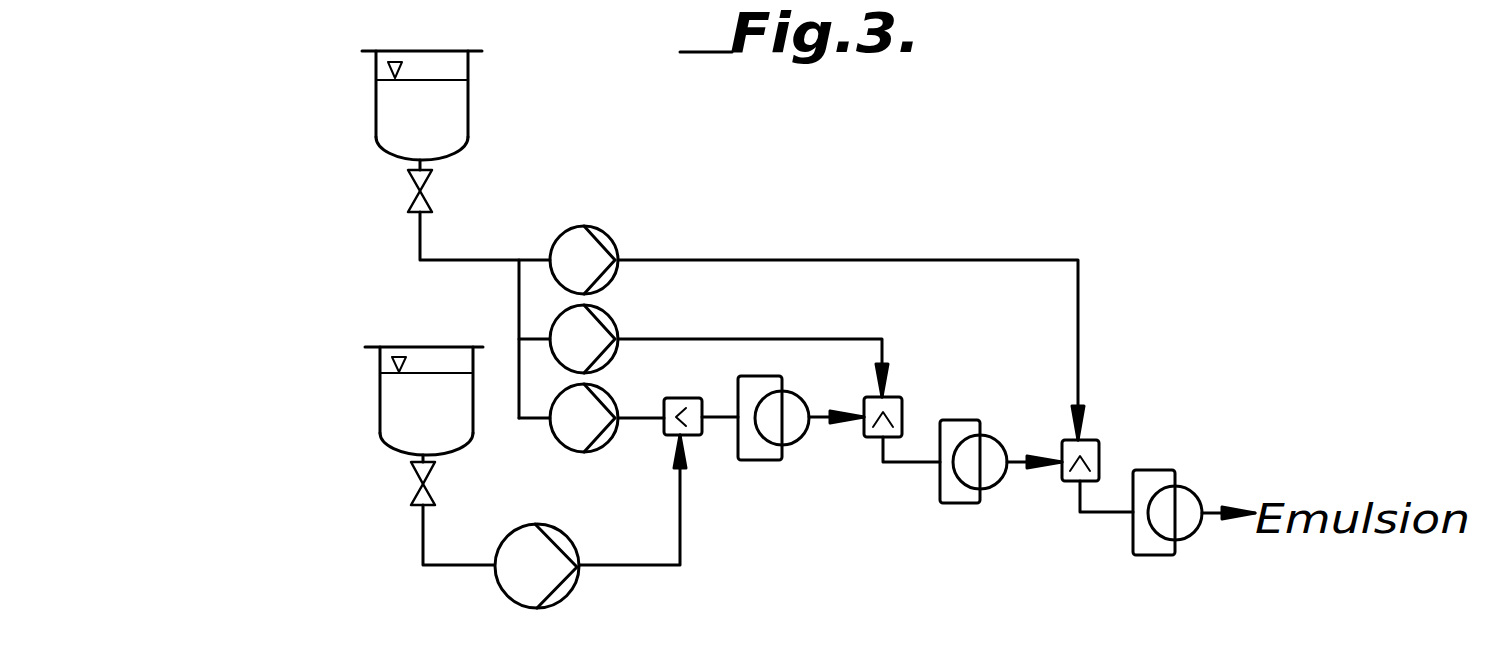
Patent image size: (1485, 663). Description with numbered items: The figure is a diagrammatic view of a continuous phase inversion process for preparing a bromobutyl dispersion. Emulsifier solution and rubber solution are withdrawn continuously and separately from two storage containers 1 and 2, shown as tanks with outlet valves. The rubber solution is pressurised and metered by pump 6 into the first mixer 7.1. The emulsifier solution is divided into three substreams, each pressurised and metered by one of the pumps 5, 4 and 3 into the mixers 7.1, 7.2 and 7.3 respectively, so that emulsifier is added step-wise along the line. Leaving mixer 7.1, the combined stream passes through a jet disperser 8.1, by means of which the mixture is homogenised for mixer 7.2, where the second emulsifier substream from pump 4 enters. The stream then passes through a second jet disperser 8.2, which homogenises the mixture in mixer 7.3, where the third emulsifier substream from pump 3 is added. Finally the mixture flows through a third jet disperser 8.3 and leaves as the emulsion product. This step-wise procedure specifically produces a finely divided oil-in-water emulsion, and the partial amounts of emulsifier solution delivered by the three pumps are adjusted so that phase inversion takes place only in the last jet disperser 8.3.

The storage container 1 is at (395, 127).
The storage container 2 is at (408, 407).
The pump 3 is at (568, 248).
The pump 4 is at (593, 340).
The pump 5 is at (588, 413).
The pump 6 is at (522, 548).
The mixer 7.1 is at (695, 433).
The jet disperser 8.1 is at (767, 448).
The mixer 7.2 is at (900, 420).
The jet disperser 8.2 is at (985, 455).
The mixer 7.3 is at (1090, 447).
The jet disperser 8.3 is at (1150, 480).